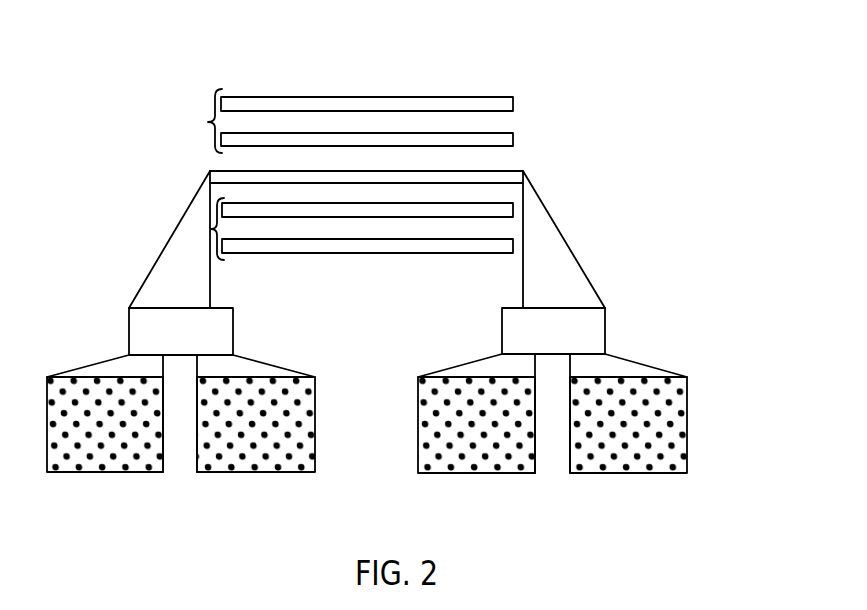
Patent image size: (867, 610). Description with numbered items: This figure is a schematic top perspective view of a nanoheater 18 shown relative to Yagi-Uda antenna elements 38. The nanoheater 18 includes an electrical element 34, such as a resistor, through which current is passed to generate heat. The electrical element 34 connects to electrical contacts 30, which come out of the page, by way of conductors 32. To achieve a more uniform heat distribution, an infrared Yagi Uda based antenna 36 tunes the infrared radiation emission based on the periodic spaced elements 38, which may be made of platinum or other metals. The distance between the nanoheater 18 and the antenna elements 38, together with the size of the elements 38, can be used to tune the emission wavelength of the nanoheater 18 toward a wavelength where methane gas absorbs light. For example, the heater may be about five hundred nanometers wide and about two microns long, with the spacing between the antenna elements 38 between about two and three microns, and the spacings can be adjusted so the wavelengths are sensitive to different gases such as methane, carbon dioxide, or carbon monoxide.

The nanoheater 18 is at (400, 292).
The electrical contacts 30 is at (257, 472).
The conductors 32 is at (147, 282).
The electrical element 34 is at (510, 167).
The infrared Yagi Uda based antenna 36 is at (330, 193).
The Yagi-Uda antenna elements 38 is at (335, 138).